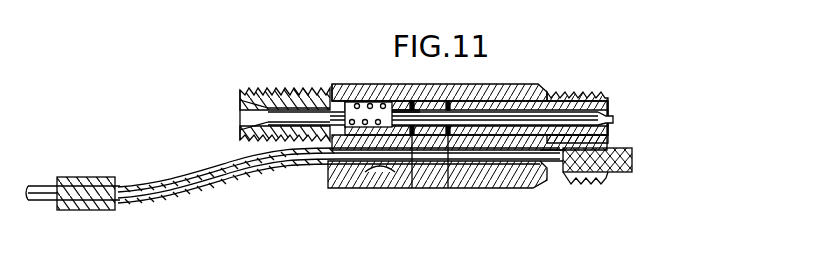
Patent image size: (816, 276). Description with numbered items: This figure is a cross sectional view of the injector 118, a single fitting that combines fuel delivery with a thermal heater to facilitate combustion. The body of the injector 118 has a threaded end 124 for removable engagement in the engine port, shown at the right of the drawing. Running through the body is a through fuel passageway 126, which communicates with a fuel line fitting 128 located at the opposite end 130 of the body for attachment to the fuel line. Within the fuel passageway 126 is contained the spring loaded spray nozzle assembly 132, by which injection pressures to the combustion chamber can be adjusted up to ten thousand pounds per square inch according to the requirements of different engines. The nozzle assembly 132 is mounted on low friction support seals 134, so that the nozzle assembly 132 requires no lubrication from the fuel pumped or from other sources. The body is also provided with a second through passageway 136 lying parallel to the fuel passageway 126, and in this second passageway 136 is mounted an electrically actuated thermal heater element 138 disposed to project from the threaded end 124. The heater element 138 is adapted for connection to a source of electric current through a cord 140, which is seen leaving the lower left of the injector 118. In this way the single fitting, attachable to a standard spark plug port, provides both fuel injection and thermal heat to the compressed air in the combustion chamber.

The injector 118 is at (492, 82).
The threaded end 124 is at (590, 95).
The through fuel passageway 126 is at (613, 122).
The fuel line fitting 128 is at (276, 88).
The end 130 is at (327, 88).
The spring loaded spray nozzle assembly 132 is at (528, 117).
The low friction support seals 134 is at (417, 170).
The second through passageway 136 is at (367, 170).
The thermal heater element 138 is at (620, 168).
The cord 140 is at (200, 180).